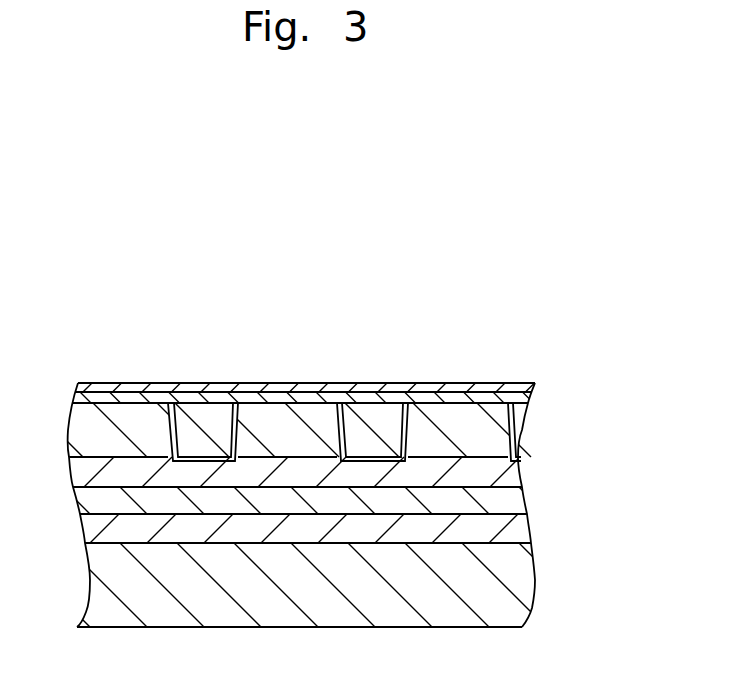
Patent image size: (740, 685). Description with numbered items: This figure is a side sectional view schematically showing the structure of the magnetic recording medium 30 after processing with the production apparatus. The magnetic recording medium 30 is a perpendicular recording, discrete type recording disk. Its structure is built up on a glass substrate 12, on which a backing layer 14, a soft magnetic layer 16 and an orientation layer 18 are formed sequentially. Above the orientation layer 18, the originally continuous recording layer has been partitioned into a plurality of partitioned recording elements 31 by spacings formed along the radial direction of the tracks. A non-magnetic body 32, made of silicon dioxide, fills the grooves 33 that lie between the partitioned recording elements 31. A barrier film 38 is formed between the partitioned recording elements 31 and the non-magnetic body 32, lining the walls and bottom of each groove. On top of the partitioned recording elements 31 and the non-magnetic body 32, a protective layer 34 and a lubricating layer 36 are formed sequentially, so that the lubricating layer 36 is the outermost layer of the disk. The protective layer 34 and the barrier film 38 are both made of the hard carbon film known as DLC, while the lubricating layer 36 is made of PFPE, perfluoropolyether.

The magnetic recording medium 30 is at (294, 142).
The glass substrate 12 is at (533, 587).
The backing layer 14 is at (528, 523).
The soft magnetic layer 16 is at (523, 495).
The orientation layer 18 is at (523, 478).
The partitioned recording elements 31 is at (317, 417).
The non-magnetic body 32 is at (188, 412).
The grooves 33 is at (348, 428).
The protective layer 34 is at (148, 397).
The lubricating layer 36 is at (123, 387).
The barrier film 38 is at (183, 440).